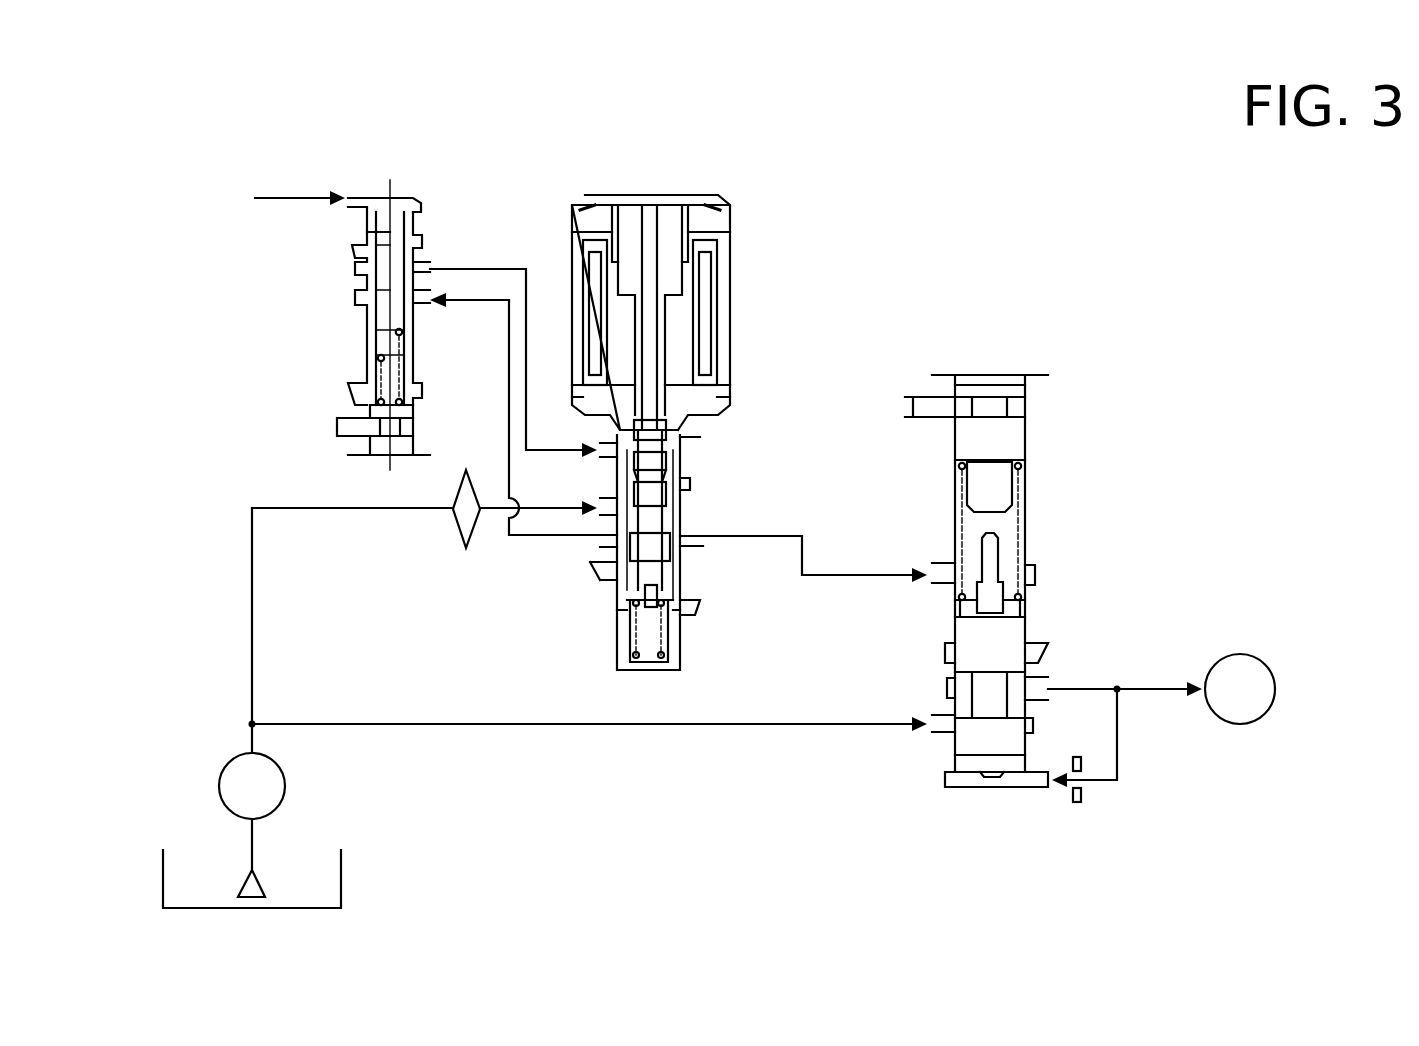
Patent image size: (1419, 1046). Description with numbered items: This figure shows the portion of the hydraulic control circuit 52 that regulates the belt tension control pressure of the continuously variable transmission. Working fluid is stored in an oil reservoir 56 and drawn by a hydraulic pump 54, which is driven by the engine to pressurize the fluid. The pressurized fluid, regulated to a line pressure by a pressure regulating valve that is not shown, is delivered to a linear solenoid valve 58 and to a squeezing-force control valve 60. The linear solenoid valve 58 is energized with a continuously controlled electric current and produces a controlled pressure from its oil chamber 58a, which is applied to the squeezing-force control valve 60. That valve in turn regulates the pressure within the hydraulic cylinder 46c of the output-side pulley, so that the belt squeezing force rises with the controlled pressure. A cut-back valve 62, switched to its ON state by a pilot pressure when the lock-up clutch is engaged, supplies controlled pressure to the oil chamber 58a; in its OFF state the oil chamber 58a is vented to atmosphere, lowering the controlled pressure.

The cut-back valve 62 is at (418, 140).
The linear solenoid valve 58 is at (703, 177).
The oil chamber 58a is at (690, 440).
The hydraulic control circuit 52 is at (1048, 263).
The squeezing-force control valve 60 is at (1018, 352).
The hydraulic cylinder 46c is at (1233, 668).
The hydraulic pump 54 is at (219, 786).
The oil reservoir 56 is at (341, 876).